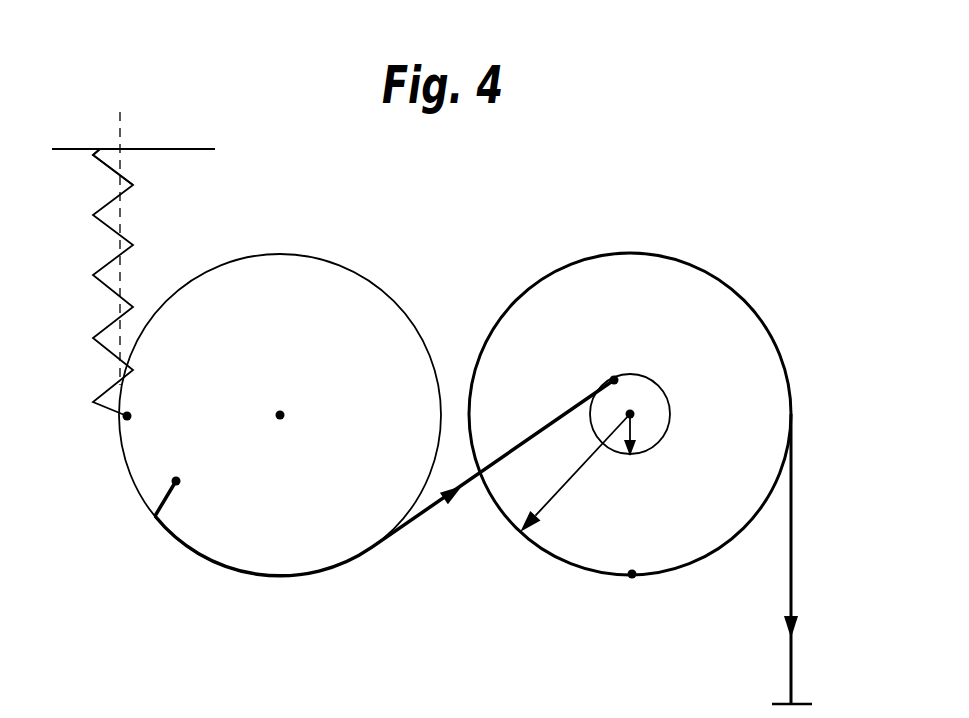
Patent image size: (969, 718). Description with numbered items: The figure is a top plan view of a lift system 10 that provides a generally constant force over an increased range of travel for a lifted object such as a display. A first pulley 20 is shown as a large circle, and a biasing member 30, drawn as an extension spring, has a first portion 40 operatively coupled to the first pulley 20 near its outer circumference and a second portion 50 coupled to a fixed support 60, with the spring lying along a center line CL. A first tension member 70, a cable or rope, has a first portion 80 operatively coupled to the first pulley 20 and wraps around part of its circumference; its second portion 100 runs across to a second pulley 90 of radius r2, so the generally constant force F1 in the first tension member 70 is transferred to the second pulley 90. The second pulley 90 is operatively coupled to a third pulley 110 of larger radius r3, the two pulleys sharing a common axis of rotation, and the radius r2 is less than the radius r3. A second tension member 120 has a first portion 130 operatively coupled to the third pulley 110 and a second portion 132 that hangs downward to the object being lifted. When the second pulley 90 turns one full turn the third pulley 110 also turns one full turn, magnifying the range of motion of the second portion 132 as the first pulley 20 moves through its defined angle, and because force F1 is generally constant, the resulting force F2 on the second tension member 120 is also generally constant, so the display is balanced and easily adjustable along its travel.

The lift system 10 is at (478, 186).
The first pulley 20 is at (303, 265).
The biasing member 30 is at (92, 216).
The first portion of the biasing member 40 is at (103, 410).
The second portion of the biasing member 50 is at (97, 158).
The support 60 is at (214, 149).
The first tension member 70 is at (413, 521).
The first portion of the first tension member 80 is at (176, 481).
The second pulley 90 is at (645, 391).
The second portion of the first tension member 100 is at (614, 380).
The third pulley 110 is at (668, 277).
The second tension member 120 is at (793, 500).
The first portion of the second tension member 130 is at (632, 576).
The second portion of the second tension member 132 is at (790, 675).
The center line CL is at (118, 140).
The force F1 is at (457, 491).
The force F2 is at (790, 630).
The radius of the second pulley r2 is at (641, 429).
The radius of the third pulley r3 is at (575, 473).